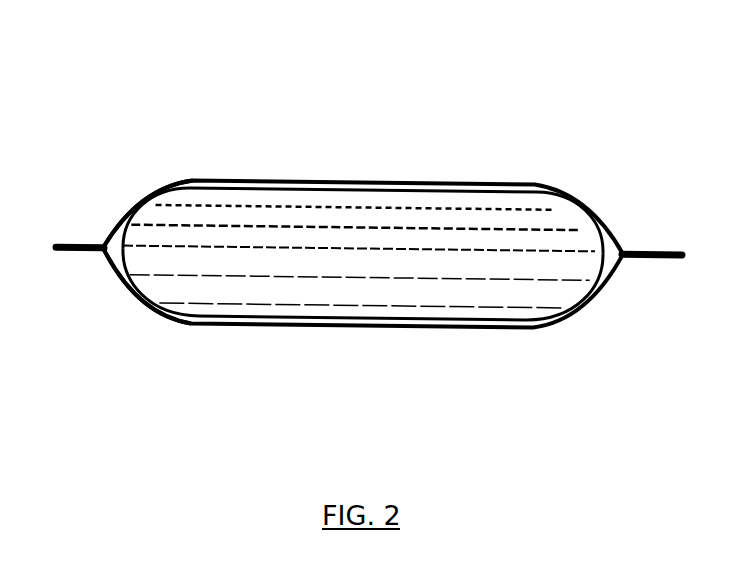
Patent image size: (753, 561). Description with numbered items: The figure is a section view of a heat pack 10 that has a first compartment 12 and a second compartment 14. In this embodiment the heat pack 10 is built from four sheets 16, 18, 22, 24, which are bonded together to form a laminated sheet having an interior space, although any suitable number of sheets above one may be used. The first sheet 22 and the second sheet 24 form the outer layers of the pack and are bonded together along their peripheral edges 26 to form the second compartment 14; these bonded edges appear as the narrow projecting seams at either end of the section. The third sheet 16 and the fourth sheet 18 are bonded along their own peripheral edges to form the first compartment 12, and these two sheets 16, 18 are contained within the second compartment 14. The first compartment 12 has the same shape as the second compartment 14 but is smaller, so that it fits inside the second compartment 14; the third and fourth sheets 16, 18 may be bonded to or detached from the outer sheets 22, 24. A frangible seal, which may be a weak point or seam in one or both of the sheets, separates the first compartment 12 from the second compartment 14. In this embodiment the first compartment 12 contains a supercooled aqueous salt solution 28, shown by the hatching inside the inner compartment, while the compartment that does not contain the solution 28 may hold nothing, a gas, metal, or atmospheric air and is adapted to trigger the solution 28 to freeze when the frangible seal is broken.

The heat pack 10 is at (369, 179).
The first compartment 12 is at (363, 253).
The second compartment 14 is at (652, 254).
The third sheet 16 is at (363, 220).
The fourth sheet 18 is at (362, 284).
The first sheet 22 is at (148, 214).
The second sheet 24 is at (147, 286).
The peripheral edges 26 is at (80, 247).
The supercooled aqueous salt solution 28 is at (358, 257).